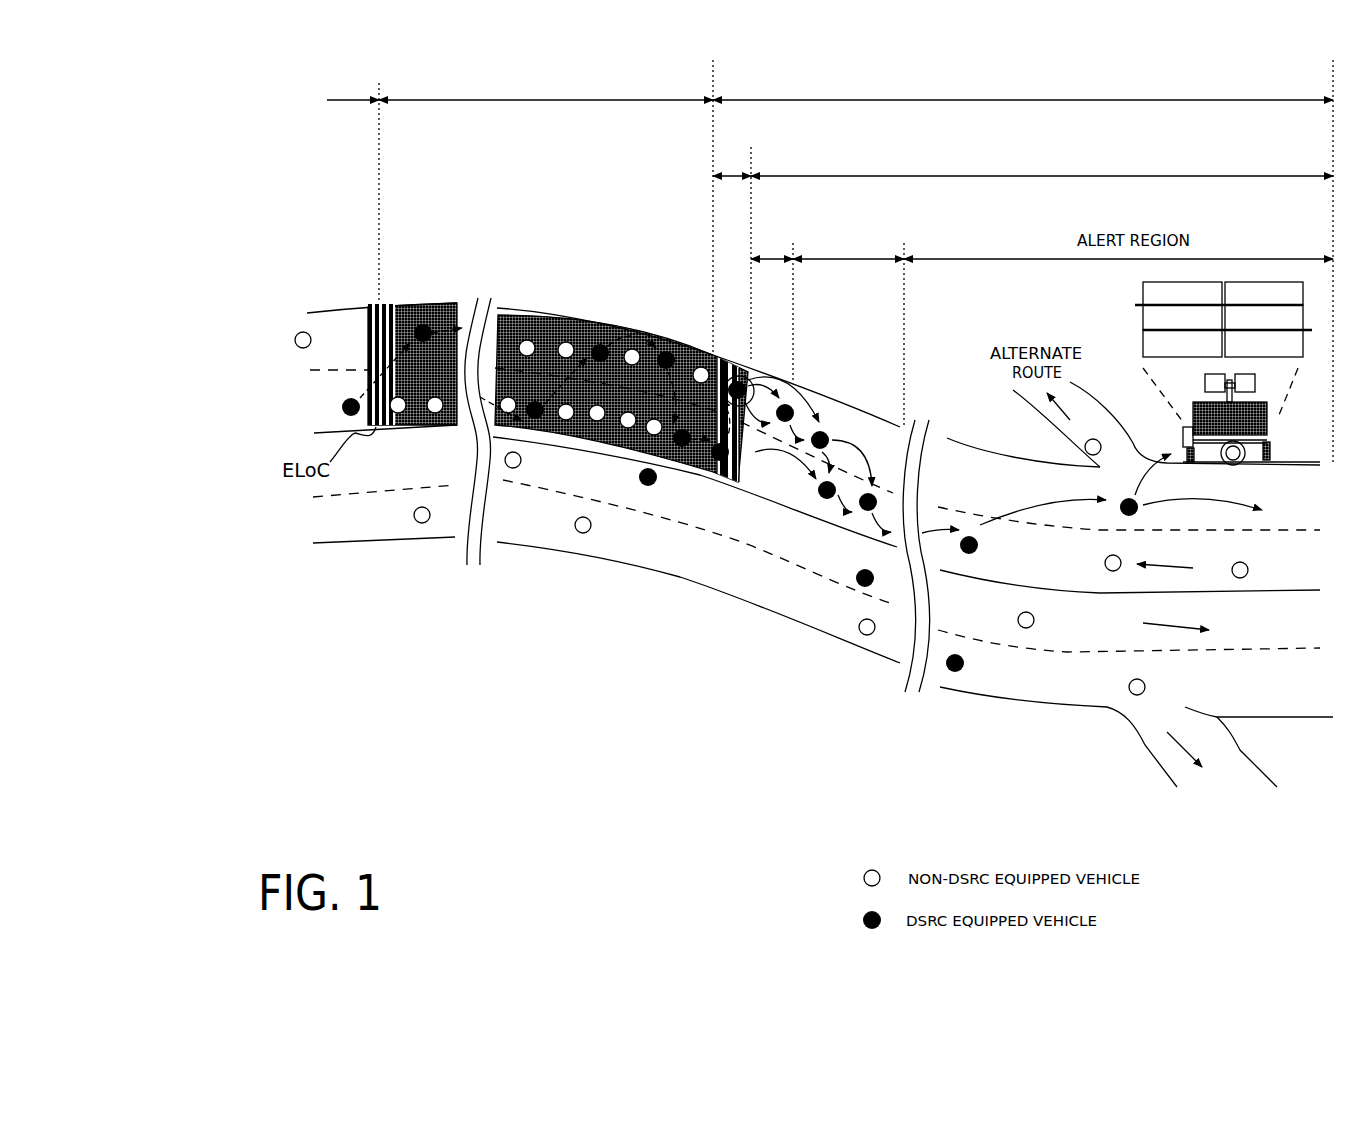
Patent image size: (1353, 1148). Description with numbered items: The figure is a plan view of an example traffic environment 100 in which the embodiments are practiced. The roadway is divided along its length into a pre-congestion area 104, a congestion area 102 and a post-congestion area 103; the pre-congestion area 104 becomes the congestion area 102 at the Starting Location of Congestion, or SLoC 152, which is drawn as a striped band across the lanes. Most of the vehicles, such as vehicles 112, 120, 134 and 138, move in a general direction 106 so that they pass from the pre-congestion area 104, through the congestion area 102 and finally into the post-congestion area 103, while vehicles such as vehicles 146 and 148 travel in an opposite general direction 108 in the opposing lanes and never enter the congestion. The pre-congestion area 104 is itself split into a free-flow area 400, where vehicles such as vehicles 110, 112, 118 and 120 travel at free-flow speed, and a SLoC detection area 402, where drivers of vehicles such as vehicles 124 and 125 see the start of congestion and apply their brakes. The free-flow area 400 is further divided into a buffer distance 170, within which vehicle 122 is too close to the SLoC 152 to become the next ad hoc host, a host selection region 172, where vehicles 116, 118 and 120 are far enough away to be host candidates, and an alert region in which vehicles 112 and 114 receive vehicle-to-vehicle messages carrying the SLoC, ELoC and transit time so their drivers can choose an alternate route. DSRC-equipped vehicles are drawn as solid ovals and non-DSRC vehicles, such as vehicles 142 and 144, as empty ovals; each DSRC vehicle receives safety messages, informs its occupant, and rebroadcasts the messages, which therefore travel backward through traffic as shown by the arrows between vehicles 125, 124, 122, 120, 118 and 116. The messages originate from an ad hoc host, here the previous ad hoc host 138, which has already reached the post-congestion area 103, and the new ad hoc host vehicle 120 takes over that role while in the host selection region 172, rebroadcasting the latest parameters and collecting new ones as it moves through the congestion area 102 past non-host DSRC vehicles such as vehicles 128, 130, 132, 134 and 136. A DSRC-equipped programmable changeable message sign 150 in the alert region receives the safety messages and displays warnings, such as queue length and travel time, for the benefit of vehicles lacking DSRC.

The traffic environment 100 is at (627, 690).
The congestion area 102 is at (546, 207).
The post-congestion area 103 is at (304, 182).
The pre-congestion area 104 is at (1023, 262).
The general direction 106 is at (1193, 597).
The opposite general direction 108 is at (1187, 632).
The vehicle 110 is at (1113, 575).
The vehicle 112 is at (969, 556).
The vehicle 114 is at (1122, 518).
The vehicle 116 is at (867, 513).
The vehicle 118 is at (823, 503).
The new ad hoc host vehicle 120 is at (823, 437).
The vehicle 122 is at (786, 403).
The vehicle 124 is at (722, 462).
The vehicle 125 is at (738, 380).
The vehicle 128 is at (667, 482).
The vehicle 130 is at (660, 352).
The vehicle 132 is at (590, 342).
The vehicle 134 is at (534, 422).
The vehicle 136 is at (425, 325).
The previous ad hoc host 138 is at (351, 397).
The non-DSRC equipped vehicle 142 is at (400, 415).
The non-DSRC equipped vehicle 144 is at (298, 348).
The vehicle 146 is at (953, 673).
The vehicle 148 is at (577, 530).
The DSRC-equipped programmable changeable message sign 150 is at (1211, 364).
The Starting Location of Congestion (SLoC) 152 is at (712, 348).
The buffer distance 170 is at (808, 282).
The host selection region 172 is at (871, 322).
The free-flow area 400 is at (1042, 165).
The SLoC detection area 402 is at (718, 176).